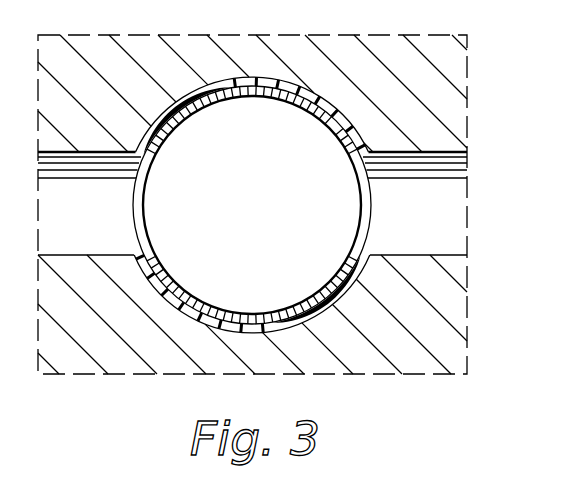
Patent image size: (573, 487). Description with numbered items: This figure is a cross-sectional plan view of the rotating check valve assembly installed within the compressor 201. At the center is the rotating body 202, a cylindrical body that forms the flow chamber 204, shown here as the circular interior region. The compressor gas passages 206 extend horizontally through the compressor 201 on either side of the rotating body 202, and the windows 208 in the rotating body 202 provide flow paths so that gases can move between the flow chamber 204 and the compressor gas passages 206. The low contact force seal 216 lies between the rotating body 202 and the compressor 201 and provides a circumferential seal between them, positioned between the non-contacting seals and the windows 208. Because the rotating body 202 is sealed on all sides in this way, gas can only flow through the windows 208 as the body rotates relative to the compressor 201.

The compressor 201 is at (458, 60).
The rotating body 202 is at (340, 128).
The flow chamber 204 is at (274, 213).
The compressor gas passages 206 is at (103, 213).
The windows 208 is at (150, 162).
The low contact force seal 216 is at (250, 326).